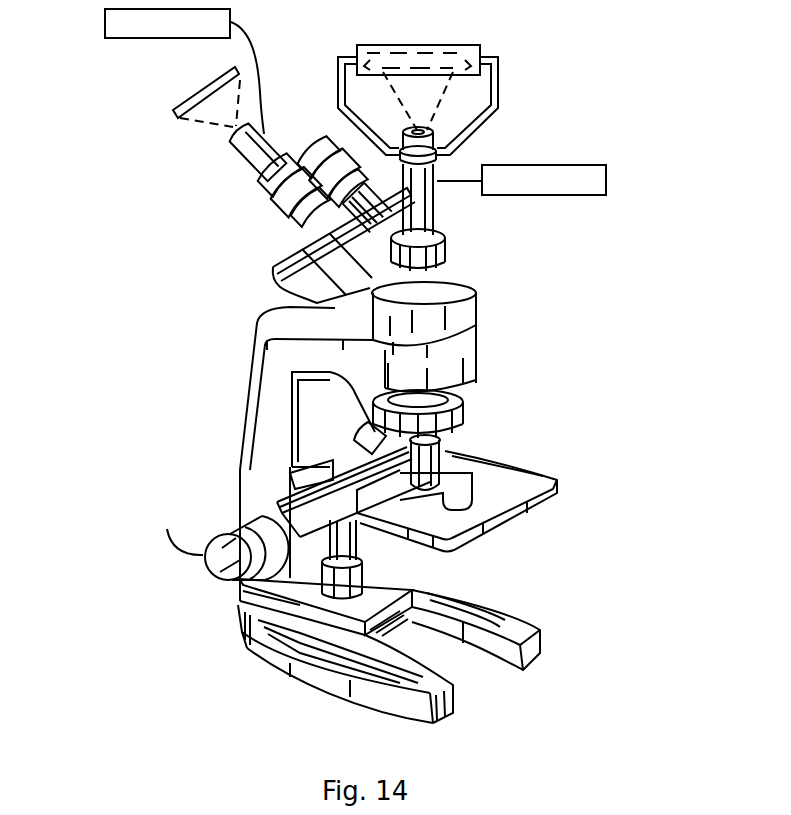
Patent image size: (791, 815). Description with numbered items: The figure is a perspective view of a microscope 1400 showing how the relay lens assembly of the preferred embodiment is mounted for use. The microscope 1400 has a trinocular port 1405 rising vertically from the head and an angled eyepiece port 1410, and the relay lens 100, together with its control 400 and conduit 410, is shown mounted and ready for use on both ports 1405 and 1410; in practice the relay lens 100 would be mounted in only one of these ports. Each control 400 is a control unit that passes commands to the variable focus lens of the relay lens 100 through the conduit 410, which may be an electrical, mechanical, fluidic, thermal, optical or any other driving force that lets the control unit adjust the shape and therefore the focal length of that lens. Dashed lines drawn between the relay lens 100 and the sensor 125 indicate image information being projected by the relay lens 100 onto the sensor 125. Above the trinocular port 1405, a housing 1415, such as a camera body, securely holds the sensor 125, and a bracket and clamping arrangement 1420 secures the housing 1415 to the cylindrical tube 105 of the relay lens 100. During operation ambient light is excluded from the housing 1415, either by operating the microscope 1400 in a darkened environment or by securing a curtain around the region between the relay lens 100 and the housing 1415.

The relay lens 100 is at (242, 175).
The cylindrical tube 105 is at (440, 224).
The sensor 125 is at (181, 121).
The control unit 400 is at (105, 24).
The conduit 410 is at (245, 26).
The microscope 1400 is at (558, 342).
The trinocular port 1405 is at (445, 242).
The eyepiece port 1410 is at (267, 188).
The housing 1415 is at (445, 45).
The bracket and clamping arrangement 1420 is at (498, 72).